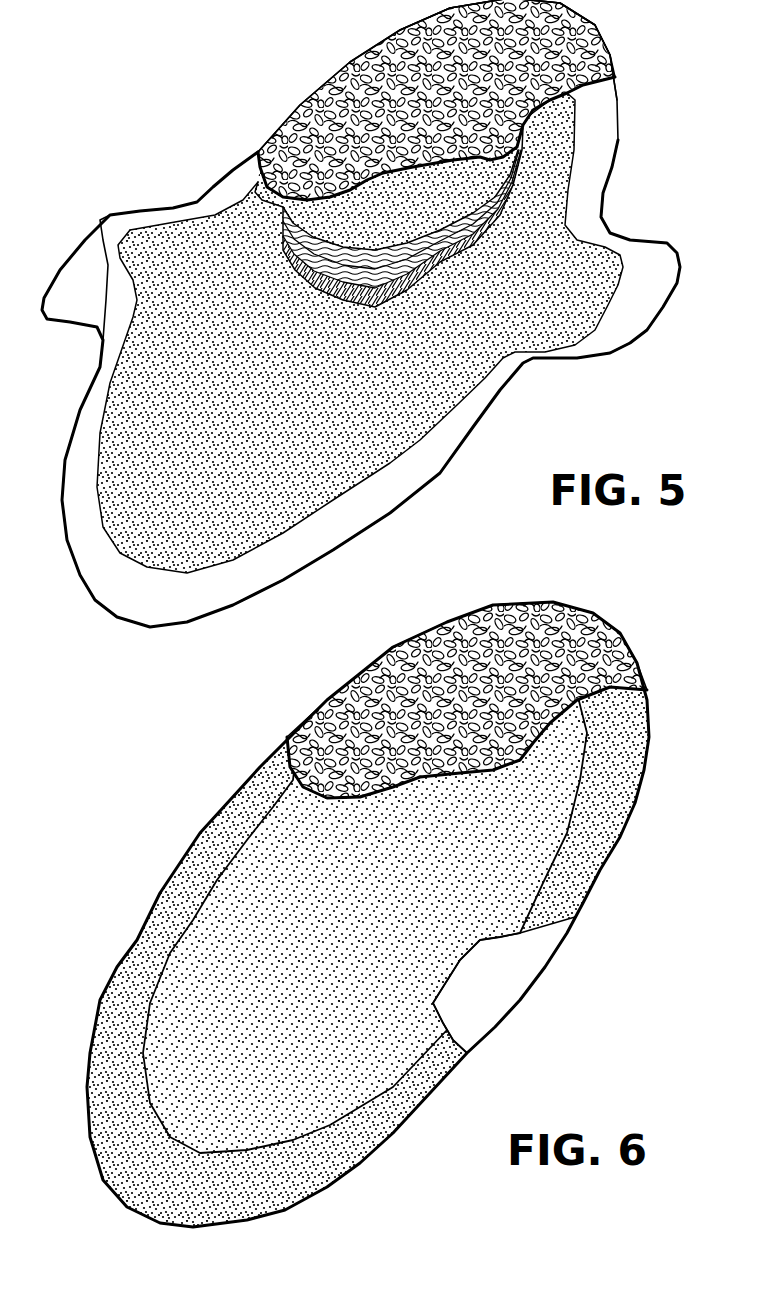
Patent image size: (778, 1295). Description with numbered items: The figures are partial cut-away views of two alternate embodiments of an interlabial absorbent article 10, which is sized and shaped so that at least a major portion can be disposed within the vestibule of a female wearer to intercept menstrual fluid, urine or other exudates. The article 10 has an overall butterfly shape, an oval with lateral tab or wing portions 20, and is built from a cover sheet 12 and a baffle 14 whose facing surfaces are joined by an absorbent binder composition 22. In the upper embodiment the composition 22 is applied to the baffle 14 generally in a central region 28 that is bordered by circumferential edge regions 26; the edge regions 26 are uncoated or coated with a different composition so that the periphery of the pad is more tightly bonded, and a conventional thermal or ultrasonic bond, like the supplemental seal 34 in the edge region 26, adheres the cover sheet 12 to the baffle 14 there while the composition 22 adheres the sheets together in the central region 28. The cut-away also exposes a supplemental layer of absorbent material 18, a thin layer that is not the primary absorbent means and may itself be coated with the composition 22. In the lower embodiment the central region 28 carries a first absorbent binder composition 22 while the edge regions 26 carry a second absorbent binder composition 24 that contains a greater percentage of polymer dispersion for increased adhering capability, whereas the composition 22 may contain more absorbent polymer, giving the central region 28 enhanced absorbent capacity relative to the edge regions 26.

In FIG. 5, the interlabial absorbent article 10 is at (228, 92).
In FIG. 6, the interlabial absorbent article 10 is at (668, 640).
In FIG. 5, the cover sheet 12 is at (314, 97).
In FIG. 6, the cover sheet 12 is at (295, 760).
In FIG. 5, the baffle 14 is at (450, 413).
In FIG. 6, the baffle 14 is at (503, 995).
In FIG. 5, the supplemental layer of absorbent material 18 is at (260, 183).
In FIG. 5, the lateral tab or wing portions 20 is at (110, 267).
In FIG. 5, the absorbent binder composition 22 is at (403, 140).
In FIG. 6, the absorbent binder composition 22 is at (517, 840).
In FIG. 6, the second absorbent binder composition 24 is at (338, 1148).
In FIG. 5, the circumferential edge regions 26 is at (630, 243).
In FIG. 6, the circumferential edge regions 26 is at (130, 987).
In FIG. 6, the central region 28 is at (523, 800).
In FIG. 5, the supplemental seal 34 is at (570, 7).